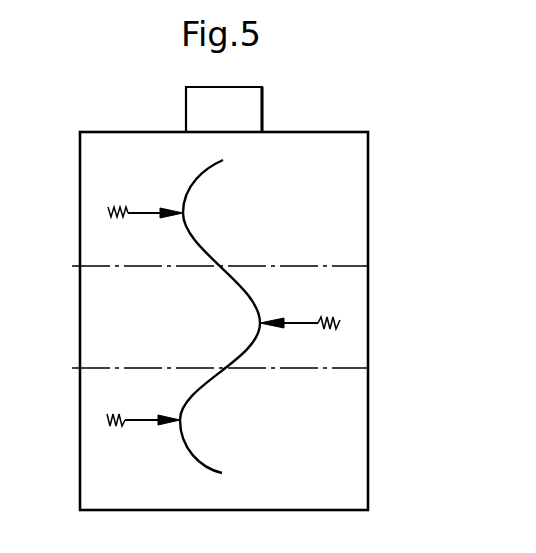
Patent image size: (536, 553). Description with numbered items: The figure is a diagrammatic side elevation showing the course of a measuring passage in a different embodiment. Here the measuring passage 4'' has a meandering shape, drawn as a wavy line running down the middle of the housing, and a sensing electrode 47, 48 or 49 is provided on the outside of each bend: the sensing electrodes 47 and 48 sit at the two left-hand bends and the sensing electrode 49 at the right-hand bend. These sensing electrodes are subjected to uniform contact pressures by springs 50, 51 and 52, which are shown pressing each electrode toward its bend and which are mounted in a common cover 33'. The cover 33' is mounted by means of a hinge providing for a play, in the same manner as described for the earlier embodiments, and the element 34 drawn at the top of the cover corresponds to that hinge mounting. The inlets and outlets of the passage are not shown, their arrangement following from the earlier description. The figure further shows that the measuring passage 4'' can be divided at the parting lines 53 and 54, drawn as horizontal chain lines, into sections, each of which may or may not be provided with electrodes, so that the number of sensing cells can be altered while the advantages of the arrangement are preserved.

The common cover 33' is at (248, 321).
The inlet box 34 is at (262, 106).
The measuring passage 4'' is at (220, 316).
The sensing electrode 47 is at (149, 209).
The sensing electrode 48 is at (148, 416).
The sensing electrode 49 is at (298, 320).
The spring 50 is at (117, 197).
The spring 51 is at (107, 414).
The spring 52 is at (340, 320).
The parting line 53 is at (88, 266).
The parting line 54 is at (88, 368).